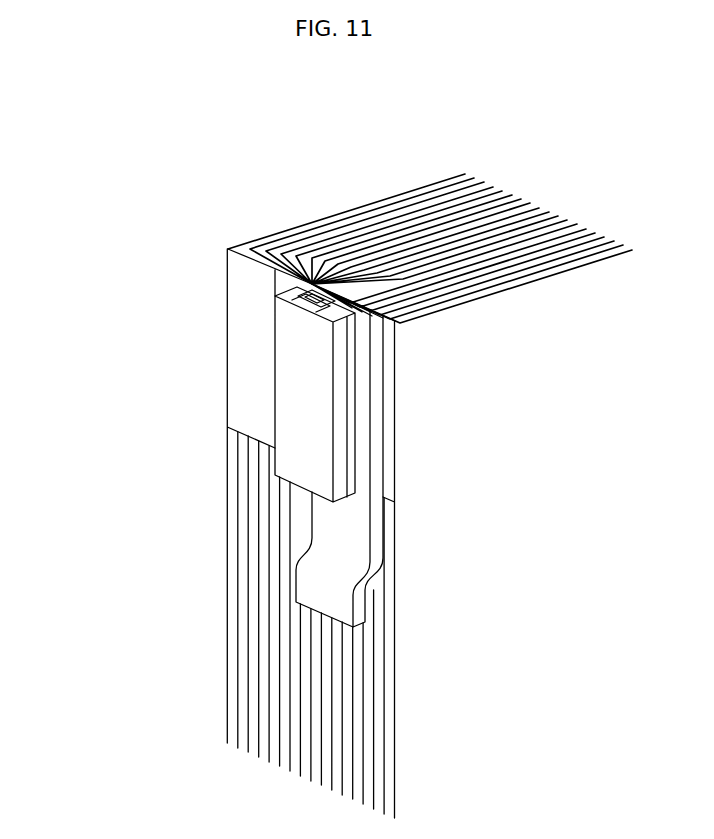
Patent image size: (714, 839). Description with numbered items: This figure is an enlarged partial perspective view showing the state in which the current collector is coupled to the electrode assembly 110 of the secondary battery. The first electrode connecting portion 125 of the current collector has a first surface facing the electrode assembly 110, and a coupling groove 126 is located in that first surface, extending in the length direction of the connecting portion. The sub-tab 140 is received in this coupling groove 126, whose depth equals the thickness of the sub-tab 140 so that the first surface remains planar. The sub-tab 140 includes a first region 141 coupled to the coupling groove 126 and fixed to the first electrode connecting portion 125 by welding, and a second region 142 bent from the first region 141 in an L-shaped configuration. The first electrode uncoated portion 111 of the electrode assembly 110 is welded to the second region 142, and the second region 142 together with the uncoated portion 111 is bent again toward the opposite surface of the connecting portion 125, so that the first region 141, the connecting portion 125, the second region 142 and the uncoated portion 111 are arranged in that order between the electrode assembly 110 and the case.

The electrode assembly 110 is at (322, 197).
The first electrode uncoated portion 111 is at (290, 412).
The first electrode connecting portion 125 is at (362, 486).
The coupling groove 126 is at (347, 297).
The sub-tab 140 is at (113, 223).
The first region 141 is at (310, 287).
The second region 142 is at (323, 315).